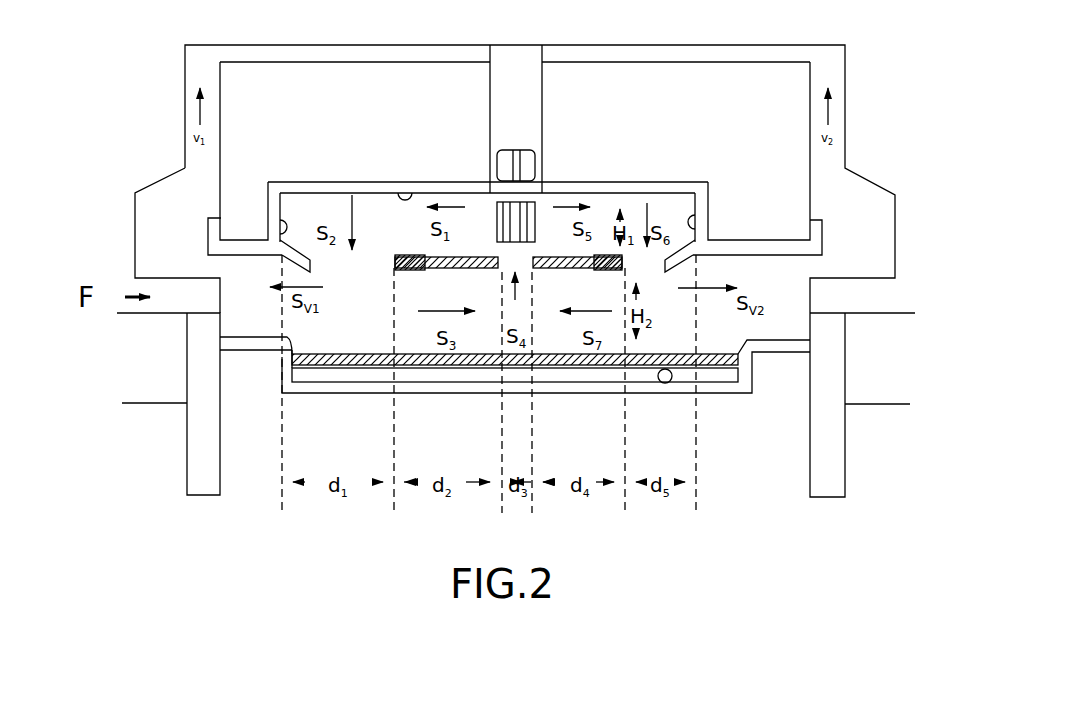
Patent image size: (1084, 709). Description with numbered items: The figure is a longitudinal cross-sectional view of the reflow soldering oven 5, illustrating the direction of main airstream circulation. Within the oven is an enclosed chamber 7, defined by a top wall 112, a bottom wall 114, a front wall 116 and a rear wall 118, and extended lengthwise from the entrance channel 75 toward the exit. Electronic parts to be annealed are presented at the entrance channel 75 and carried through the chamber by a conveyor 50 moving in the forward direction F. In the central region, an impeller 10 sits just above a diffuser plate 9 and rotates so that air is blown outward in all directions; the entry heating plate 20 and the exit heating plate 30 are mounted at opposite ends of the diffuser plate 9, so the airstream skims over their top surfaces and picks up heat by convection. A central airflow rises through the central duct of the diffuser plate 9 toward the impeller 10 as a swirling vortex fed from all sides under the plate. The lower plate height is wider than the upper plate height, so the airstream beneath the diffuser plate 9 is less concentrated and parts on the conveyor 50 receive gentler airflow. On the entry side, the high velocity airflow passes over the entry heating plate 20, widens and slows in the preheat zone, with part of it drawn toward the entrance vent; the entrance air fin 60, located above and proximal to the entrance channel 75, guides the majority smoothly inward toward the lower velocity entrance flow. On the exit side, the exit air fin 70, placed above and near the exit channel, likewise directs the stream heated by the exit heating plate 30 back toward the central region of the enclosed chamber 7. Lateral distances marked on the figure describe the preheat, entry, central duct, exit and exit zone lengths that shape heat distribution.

The reflow soldering oven 5 is at (150, 130).
The enclosed chamber 7 is at (378, 182).
The diffuser plate 9 is at (477, 257).
The impeller 10 is at (527, 218).
The entry heating plate 20 is at (392, 252).
The exit heating plate 30 is at (600, 257).
The conveyor 50 is at (270, 300).
The entrance air fin 60 is at (290, 252).
The exit air fin 70 is at (674, 258).
The entrance channel 75 is at (292, 355).
The top wall 112 is at (398, 190).
The bottom wall 114 is at (660, 384).
The front wall 116 is at (287, 252).
The rear wall 118 is at (697, 226).